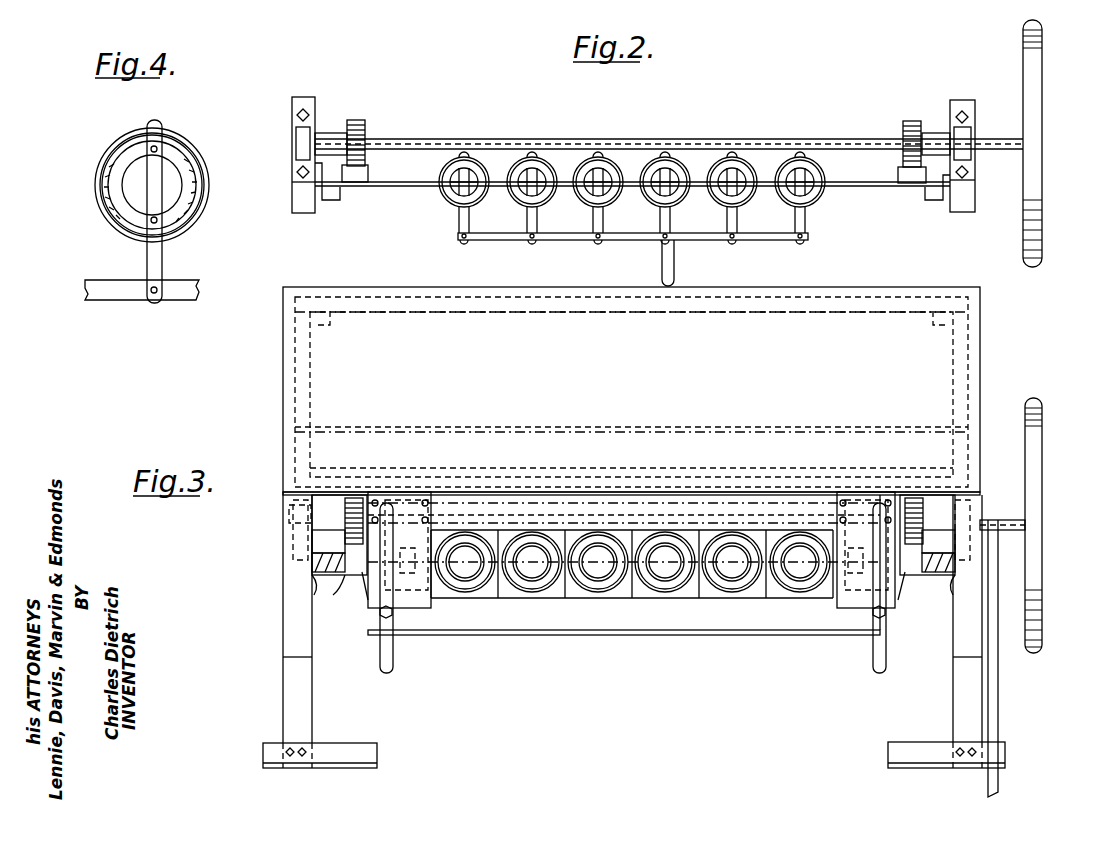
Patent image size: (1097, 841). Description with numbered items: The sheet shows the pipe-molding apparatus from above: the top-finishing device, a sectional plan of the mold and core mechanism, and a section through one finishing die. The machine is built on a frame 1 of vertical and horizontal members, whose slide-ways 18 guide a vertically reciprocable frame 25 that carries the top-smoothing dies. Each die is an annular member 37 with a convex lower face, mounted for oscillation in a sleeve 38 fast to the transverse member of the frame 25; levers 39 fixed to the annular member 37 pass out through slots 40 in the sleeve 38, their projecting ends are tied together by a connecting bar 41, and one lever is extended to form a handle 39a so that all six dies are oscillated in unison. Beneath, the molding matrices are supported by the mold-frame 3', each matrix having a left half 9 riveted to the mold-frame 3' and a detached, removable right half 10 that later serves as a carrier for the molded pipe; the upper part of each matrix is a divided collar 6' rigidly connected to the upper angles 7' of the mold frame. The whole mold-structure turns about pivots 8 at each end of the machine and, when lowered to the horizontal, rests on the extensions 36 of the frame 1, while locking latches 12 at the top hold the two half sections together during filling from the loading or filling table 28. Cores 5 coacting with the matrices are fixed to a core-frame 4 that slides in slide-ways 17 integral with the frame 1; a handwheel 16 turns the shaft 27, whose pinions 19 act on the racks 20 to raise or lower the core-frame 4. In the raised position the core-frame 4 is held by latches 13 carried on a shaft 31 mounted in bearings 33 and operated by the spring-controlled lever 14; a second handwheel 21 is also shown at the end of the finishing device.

In FIG. 2, the frame 1 is at (300, 213).
In FIG. 3, the frame 1 is at (300, 590).
In FIG. 3, the mold-frame 3' is at (765, 554).
In FIG. 3, the core-frame 4 is at (350, 590).
In FIG. 3, the cores 5 is at (530, 570).
In FIG. 3, the divided collar 6' is at (604, 602).
In FIG. 3, the upper angles 7' is at (624, 601).
In FIG. 3, the pivots 8 is at (412, 572).
In FIG. 3, the left half 9 is at (467, 532).
In FIG. 3, the right half 10 is at (500, 600).
In FIG. 3, the locking latches 12 is at (395, 655).
In FIG. 3, the latches 13 is at (360, 600).
In FIG. 3, the lever 14 is at (998, 690).
In FIG. 3, the handwheel 16 is at (1042, 462).
In FIG. 3, the slide-ways 17 is at (312, 572).
In FIG. 2, the slide-ways 18 is at (332, 200).
In FIG. 3, the pinions 19 is at (355, 498).
In FIG. 3, the racks 20 is at (312, 548).
In FIG. 2, the hand wheel 21 is at (1032, 100).
In FIG. 2, the frame 25 is at (385, 188).
In FIG. 3, the shaft 27 is at (582, 510).
In FIG. 3, the loading or filling table 28 is at (631, 389).
In FIG. 3, the shaft 31 is at (300, 520).
In FIG. 3, the bearings 33 is at (300, 490).
In FIG. 3, the extensions 36 is at (278, 688).
In FIG. 4, the annular member 37 is at (192, 228).
In FIG. 2, the annular member 37 is at (445, 195).
In FIG. 4, the sleeve 38 is at (198, 198).
In FIG. 2, the sleeve 38 is at (455, 203).
In FIG. 4, the levers 39 is at (156, 187).
In FIG. 2, the levers 39 is at (530, 219).
In FIG. 2, the handle 39a is at (674, 265).
In FIG. 4, the slots 40 is at (168, 140).
In FIG. 4, the connecting bar 41 is at (105, 298).
In FIG. 2, the connecting bar 41 is at (575, 242).